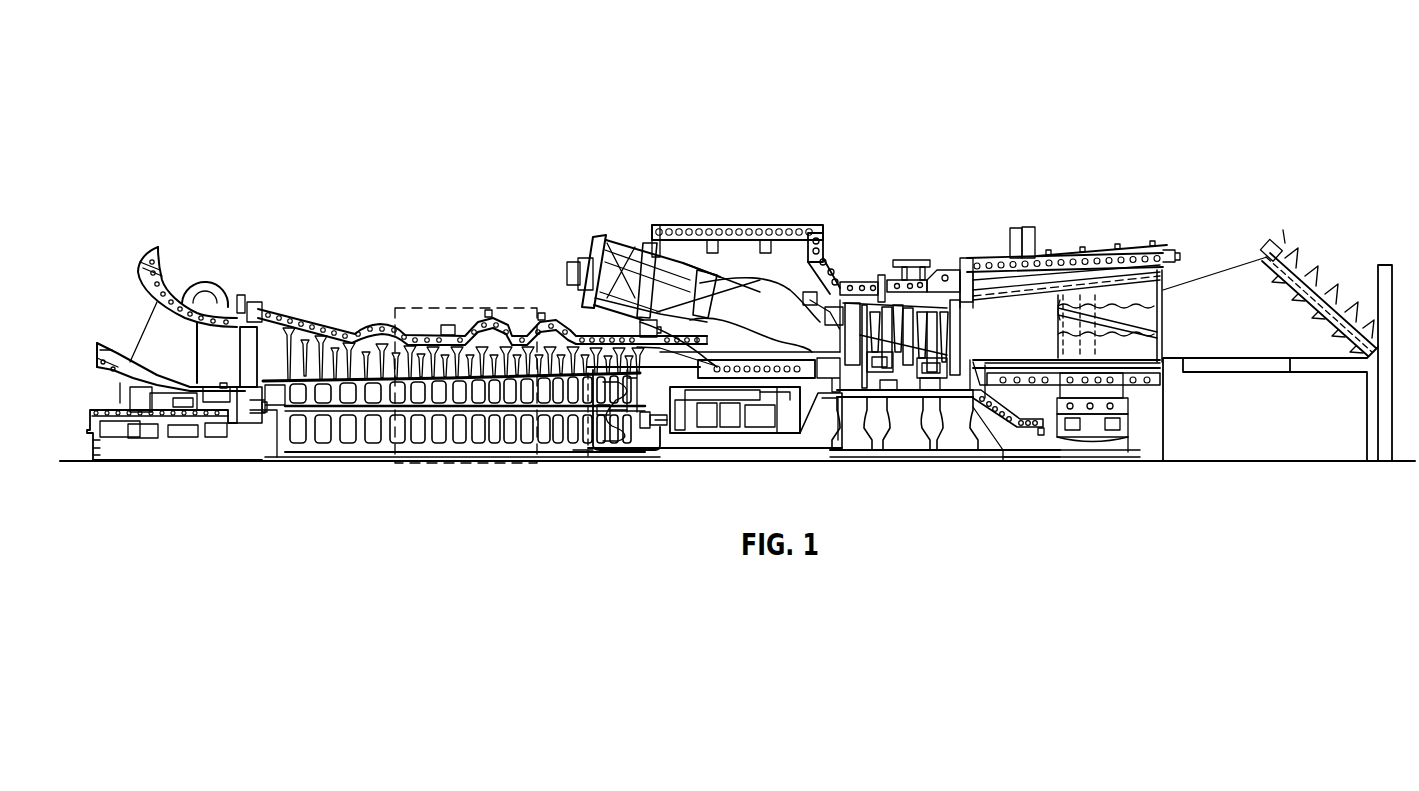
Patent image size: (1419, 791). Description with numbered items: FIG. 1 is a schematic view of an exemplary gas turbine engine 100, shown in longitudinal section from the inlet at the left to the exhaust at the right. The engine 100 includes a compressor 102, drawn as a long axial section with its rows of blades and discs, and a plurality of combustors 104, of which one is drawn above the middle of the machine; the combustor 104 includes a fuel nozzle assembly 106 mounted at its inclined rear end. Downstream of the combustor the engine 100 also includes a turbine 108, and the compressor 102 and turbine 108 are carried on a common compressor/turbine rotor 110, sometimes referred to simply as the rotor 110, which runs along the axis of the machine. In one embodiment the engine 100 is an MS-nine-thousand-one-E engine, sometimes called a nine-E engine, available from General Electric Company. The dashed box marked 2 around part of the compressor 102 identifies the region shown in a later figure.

The gas turbine engine 100 is at (276, 86).
The compressor 102 is at (413, 337).
The combustor 104 is at (820, 175).
The fuel nozzle assembly 106 is at (616, 243).
The turbine 108 is at (885, 277).
The common compressor/turbine rotor 110 is at (672, 469).
The section detail of FIG. 2 is at (502, 468).